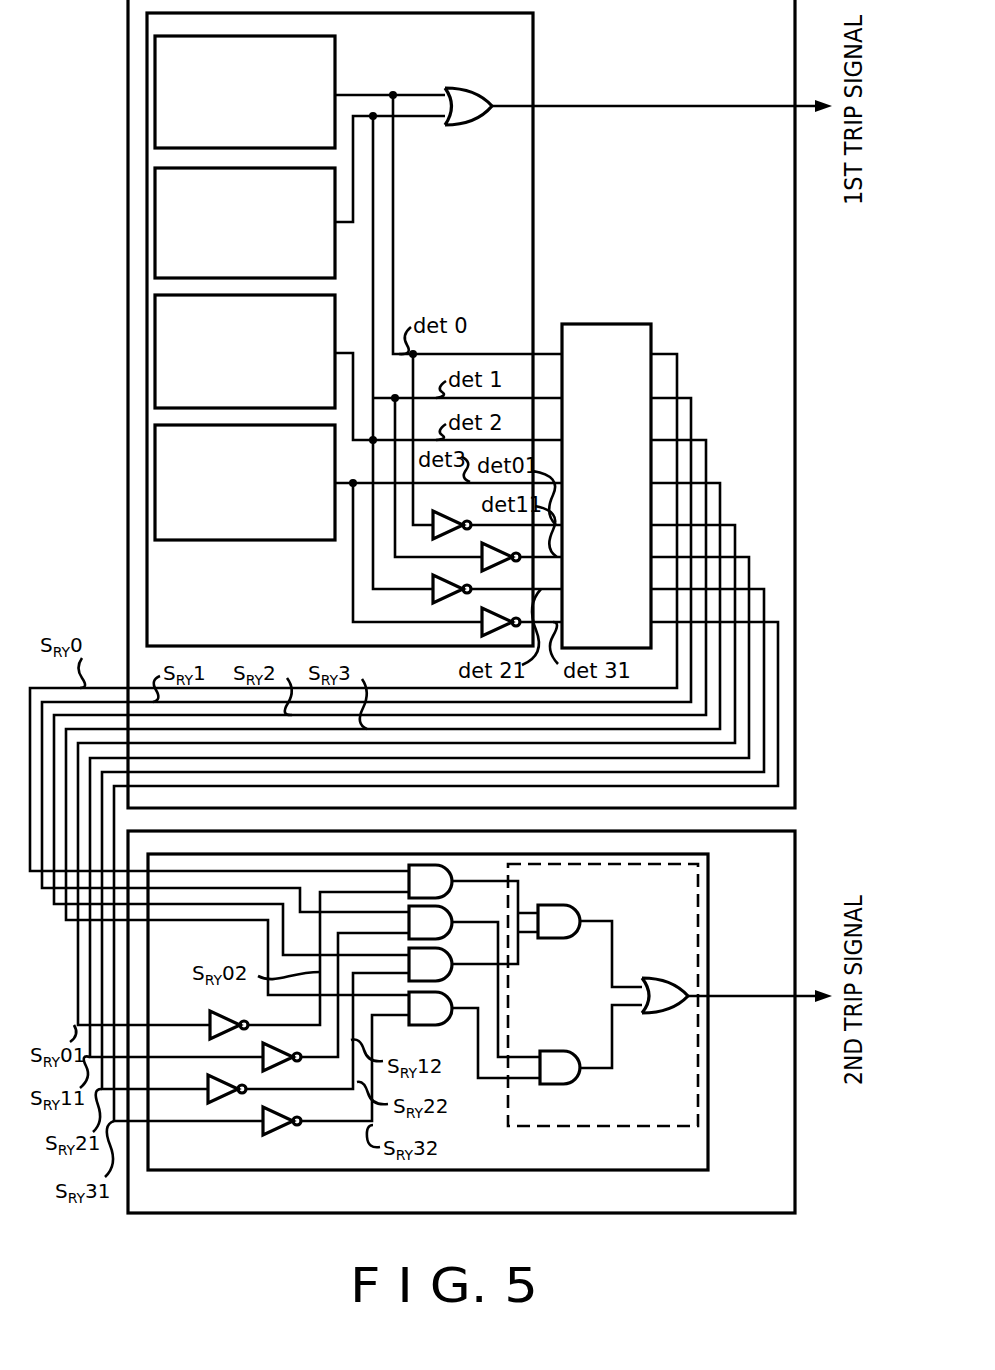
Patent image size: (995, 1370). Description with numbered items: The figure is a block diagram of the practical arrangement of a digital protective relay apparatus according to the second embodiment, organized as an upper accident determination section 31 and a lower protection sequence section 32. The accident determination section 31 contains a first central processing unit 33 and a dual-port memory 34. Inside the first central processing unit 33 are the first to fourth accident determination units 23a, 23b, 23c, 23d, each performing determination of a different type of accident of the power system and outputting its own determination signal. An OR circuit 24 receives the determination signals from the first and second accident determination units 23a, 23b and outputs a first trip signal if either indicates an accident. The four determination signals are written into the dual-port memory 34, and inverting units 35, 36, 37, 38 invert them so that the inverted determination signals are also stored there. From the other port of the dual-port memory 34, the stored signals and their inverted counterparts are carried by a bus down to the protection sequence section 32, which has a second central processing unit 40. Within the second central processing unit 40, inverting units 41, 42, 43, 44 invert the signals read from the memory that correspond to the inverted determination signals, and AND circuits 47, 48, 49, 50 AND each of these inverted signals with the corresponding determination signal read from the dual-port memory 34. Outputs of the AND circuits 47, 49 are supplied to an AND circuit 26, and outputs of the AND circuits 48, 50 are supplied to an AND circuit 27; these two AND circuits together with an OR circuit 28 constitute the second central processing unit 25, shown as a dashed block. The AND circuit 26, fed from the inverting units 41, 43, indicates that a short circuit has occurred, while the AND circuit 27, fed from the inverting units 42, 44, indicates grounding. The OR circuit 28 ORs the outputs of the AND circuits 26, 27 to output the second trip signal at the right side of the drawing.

The accident determination section 31 is at (128, 26).
The first central processing unit 33 is at (533, 43).
The first accident determination unit 23a is at (155, 78).
The second accident determination unit 23b is at (155, 183).
The third accident determination unit 23c is at (155, 314).
The fourth accident determination unit 23d is at (155, 448).
The OR circuit 24 is at (471, 88).
The dual-port memory 34 is at (629, 324).
The inverting unit 35 is at (446, 518).
The inverting unit 36 is at (498, 556).
The inverting unit 37 is at (438, 596).
The inverting unit 38 is at (487, 629).
The protection sequence section 32 is at (735, 1214).
The second central processing unit 40 is at (708, 881).
The second central processing unit 25 is at (625, 1127).
The AND circuit 26 is at (579, 905).
The AND circuit 27 is at (553, 1084).
The OR circuit 28 is at (662, 1013).
The inverting unit 41 is at (210, 1017).
The inverting unit 42 is at (275, 1049).
The inverting unit 43 is at (210, 1083).
The inverting unit 44 is at (276, 1133).
The AND circuit 47 is at (452, 868).
The AND circuit 48 is at (452, 909).
The AND circuit 49 is at (452, 951).
The AND circuit 50 is at (452, 994).